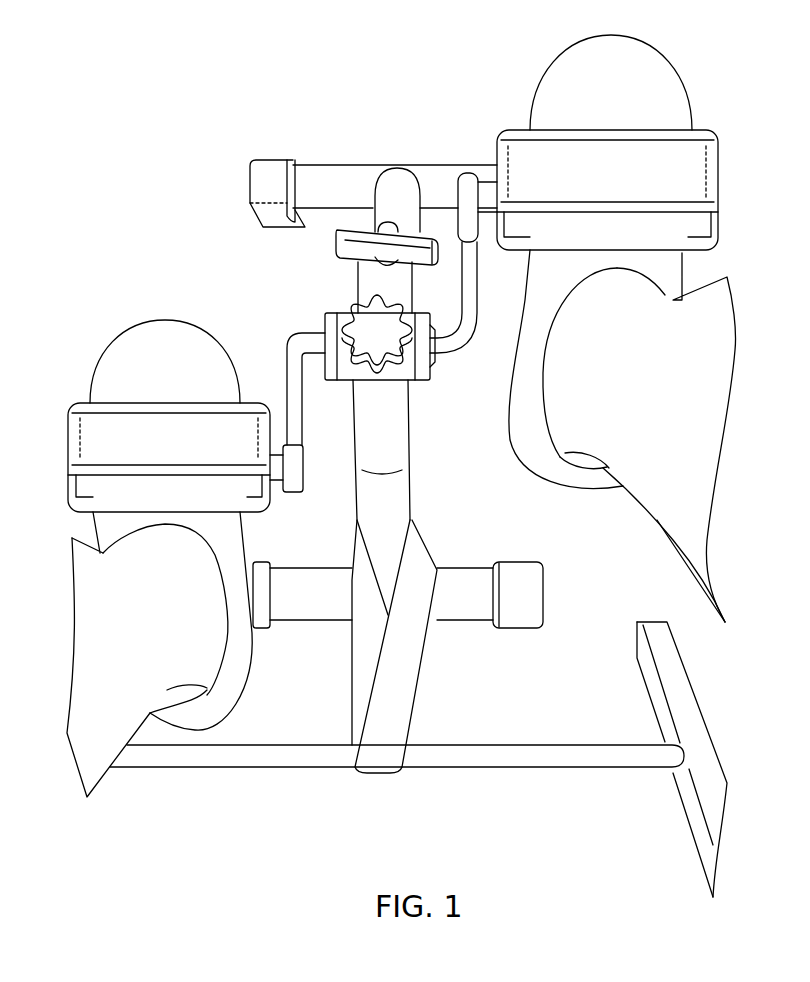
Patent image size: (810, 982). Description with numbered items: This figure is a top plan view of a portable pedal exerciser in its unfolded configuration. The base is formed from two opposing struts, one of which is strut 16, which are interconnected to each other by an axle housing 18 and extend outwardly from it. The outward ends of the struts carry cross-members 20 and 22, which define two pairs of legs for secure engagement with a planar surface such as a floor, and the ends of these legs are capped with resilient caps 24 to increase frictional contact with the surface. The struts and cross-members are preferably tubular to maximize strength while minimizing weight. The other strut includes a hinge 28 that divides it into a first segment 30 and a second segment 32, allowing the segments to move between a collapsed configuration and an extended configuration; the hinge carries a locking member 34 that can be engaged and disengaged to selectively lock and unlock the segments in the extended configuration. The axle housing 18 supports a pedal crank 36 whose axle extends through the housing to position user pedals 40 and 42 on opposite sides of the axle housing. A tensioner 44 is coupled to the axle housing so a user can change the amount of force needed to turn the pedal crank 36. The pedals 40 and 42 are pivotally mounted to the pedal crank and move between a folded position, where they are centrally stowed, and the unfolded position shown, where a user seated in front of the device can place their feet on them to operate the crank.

The strut 16 is at (395, 497).
The axle housing 18 is at (322, 337).
The cross-member 20 is at (332, 172).
The cross-member 22 is at (462, 606).
The resilient cap 24 is at (258, 192).
The hinge 28 is at (405, 700).
The first segment 30 is at (385, 203).
The second segment 32 is at (372, 296).
The locking member 34 is at (345, 249).
The pedal crank 36 is at (468, 286).
The user pedal 40 is at (700, 182).
The user pedal 42 is at (92, 415).
The tensioner 44 is at (347, 310).